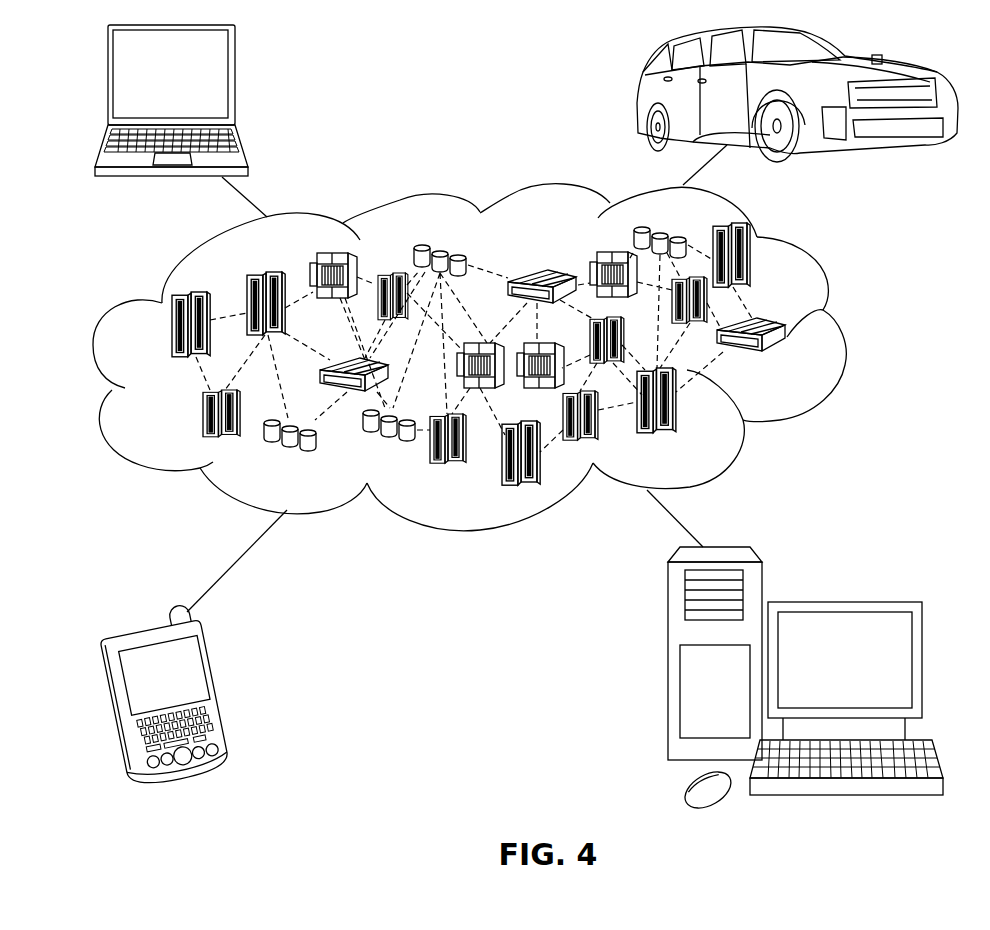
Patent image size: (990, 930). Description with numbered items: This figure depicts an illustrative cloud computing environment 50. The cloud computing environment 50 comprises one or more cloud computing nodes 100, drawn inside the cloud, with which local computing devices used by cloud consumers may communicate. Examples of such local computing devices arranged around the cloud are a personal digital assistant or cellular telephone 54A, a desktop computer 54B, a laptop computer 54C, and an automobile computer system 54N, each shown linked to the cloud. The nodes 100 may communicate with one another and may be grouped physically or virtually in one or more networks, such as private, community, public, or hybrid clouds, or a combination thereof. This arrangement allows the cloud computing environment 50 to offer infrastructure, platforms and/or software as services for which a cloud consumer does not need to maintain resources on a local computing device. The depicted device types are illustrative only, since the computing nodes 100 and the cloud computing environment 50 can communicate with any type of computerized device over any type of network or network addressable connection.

The cloud computing environment 50 is at (843, 332).
The cloud computing nodes 100 is at (796, 364).
The personal digital assistant or cellular telephone 54A is at (243, 688).
The desktop computer 54B is at (842, 600).
The laptop computer 54C is at (235, 80).
The automobile computer system 54N is at (640, 93).